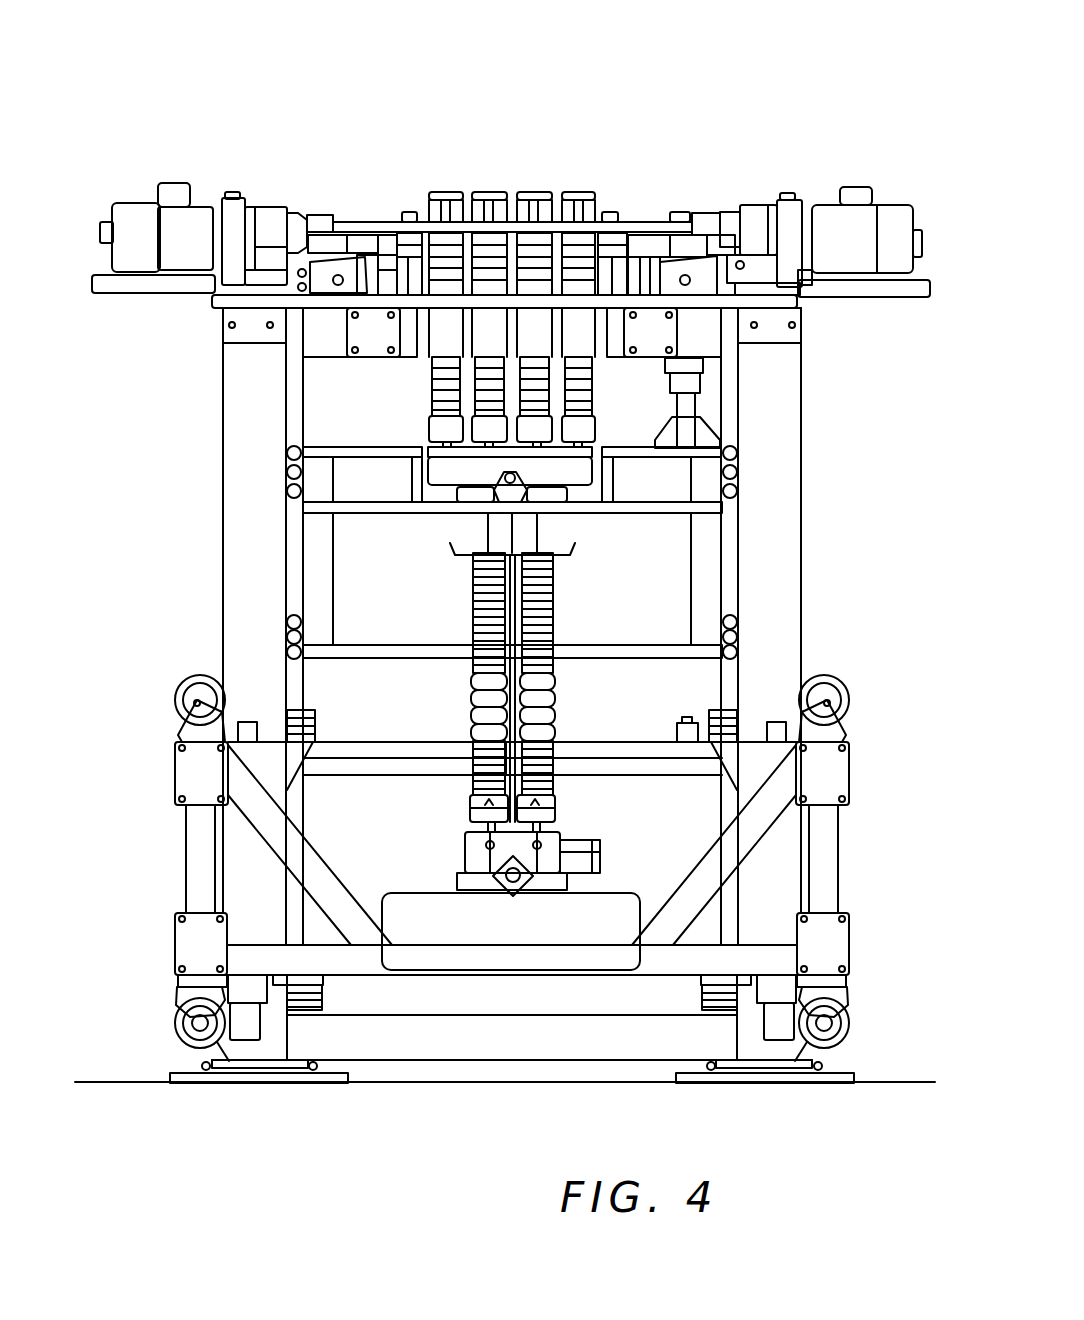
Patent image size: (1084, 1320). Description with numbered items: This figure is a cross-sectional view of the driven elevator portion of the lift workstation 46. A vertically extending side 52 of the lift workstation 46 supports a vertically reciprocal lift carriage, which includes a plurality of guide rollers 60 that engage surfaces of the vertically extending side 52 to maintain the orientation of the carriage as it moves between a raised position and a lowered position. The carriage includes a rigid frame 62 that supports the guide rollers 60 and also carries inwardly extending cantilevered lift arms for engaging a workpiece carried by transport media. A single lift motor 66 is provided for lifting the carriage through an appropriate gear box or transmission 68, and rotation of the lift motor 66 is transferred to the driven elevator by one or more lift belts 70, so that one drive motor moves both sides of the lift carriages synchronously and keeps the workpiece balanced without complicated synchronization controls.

The lift workstation 46 is at (383, 70).
The vertically extending side 52 is at (233, 493).
The guide rollers 60 is at (197, 675).
The rigid frame 62 is at (418, 745).
The lift motor 66 is at (866, 178).
The gear box or transmission 68 is at (747, 228).
The lift belts 70 is at (472, 605).